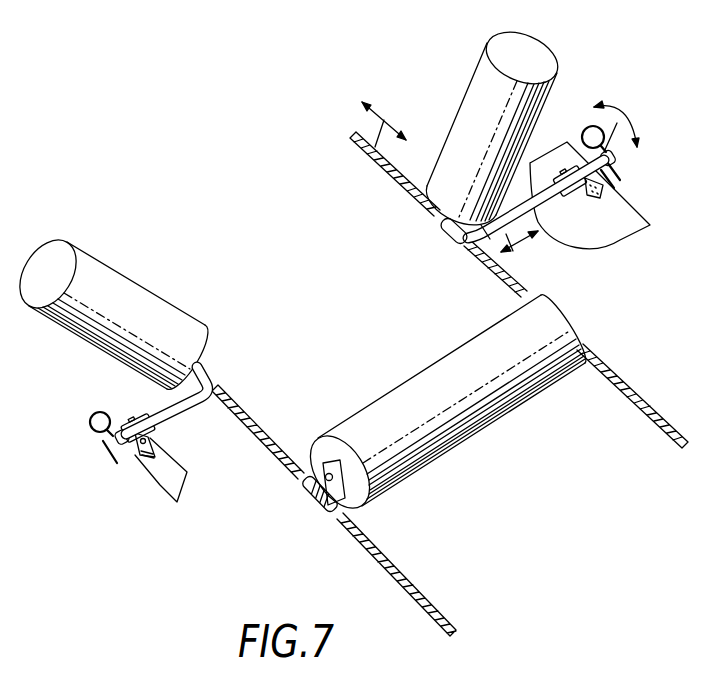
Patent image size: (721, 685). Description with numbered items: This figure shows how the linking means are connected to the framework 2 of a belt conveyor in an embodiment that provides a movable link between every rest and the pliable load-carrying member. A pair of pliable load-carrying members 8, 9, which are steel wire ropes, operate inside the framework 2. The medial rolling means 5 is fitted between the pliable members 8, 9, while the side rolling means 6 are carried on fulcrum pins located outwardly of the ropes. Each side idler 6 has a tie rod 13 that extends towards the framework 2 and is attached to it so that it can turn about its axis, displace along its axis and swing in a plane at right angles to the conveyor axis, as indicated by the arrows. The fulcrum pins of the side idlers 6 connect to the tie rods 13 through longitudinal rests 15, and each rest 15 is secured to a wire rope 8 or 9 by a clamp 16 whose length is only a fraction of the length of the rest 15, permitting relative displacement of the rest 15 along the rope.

The framework 2 is at (150, 478).
The medial rolling means 5 is at (499, 404).
The side rolling means 6 is at (553, 70).
The pliable load-carrying member 8 is at (641, 407).
The pliable load-carrying member 9 is at (434, 600).
The linking means 13 is at (545, 205).
The longitudinal rest 15 is at (469, 247).
The clamp 16 is at (443, 232).